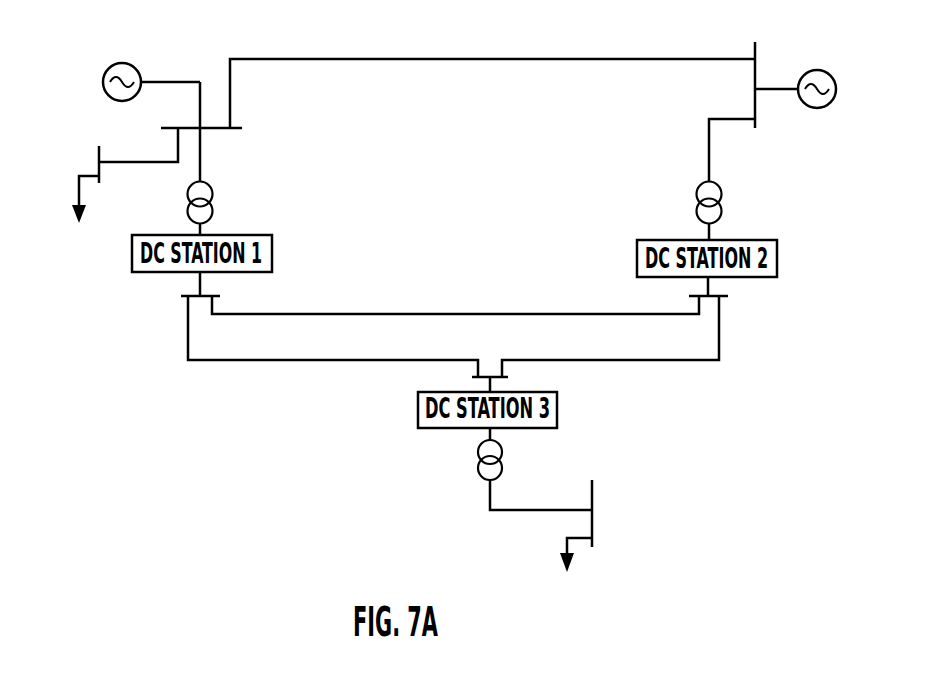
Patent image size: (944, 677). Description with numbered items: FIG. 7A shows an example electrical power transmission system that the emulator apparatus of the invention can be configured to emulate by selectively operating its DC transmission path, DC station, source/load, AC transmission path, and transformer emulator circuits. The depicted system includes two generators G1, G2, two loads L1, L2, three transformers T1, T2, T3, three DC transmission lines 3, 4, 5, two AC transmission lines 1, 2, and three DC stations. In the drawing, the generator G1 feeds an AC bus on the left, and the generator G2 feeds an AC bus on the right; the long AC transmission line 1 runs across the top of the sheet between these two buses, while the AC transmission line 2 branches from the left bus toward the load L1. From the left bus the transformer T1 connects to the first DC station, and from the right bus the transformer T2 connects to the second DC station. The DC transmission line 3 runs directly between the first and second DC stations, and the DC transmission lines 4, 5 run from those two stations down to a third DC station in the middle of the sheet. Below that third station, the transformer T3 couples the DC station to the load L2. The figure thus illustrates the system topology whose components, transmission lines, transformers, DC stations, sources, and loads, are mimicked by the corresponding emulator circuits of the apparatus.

The AC transmission line 1 is at (443, 59).
The AC transmission line 2 is at (130, 160).
The DC transmission line 3 is at (444, 313).
The DC transmission line 4 is at (293, 362).
The DC transmission line 5 is at (603, 362).
The generator G1 is at (151, 72).
The generator G2 is at (809, 76).
The transformer T1 is at (213, 193).
The transformer T2 is at (722, 207).
The transformer T3 is at (503, 452).
The load L1 is at (69, 199).
The load L2 is at (541, 544).